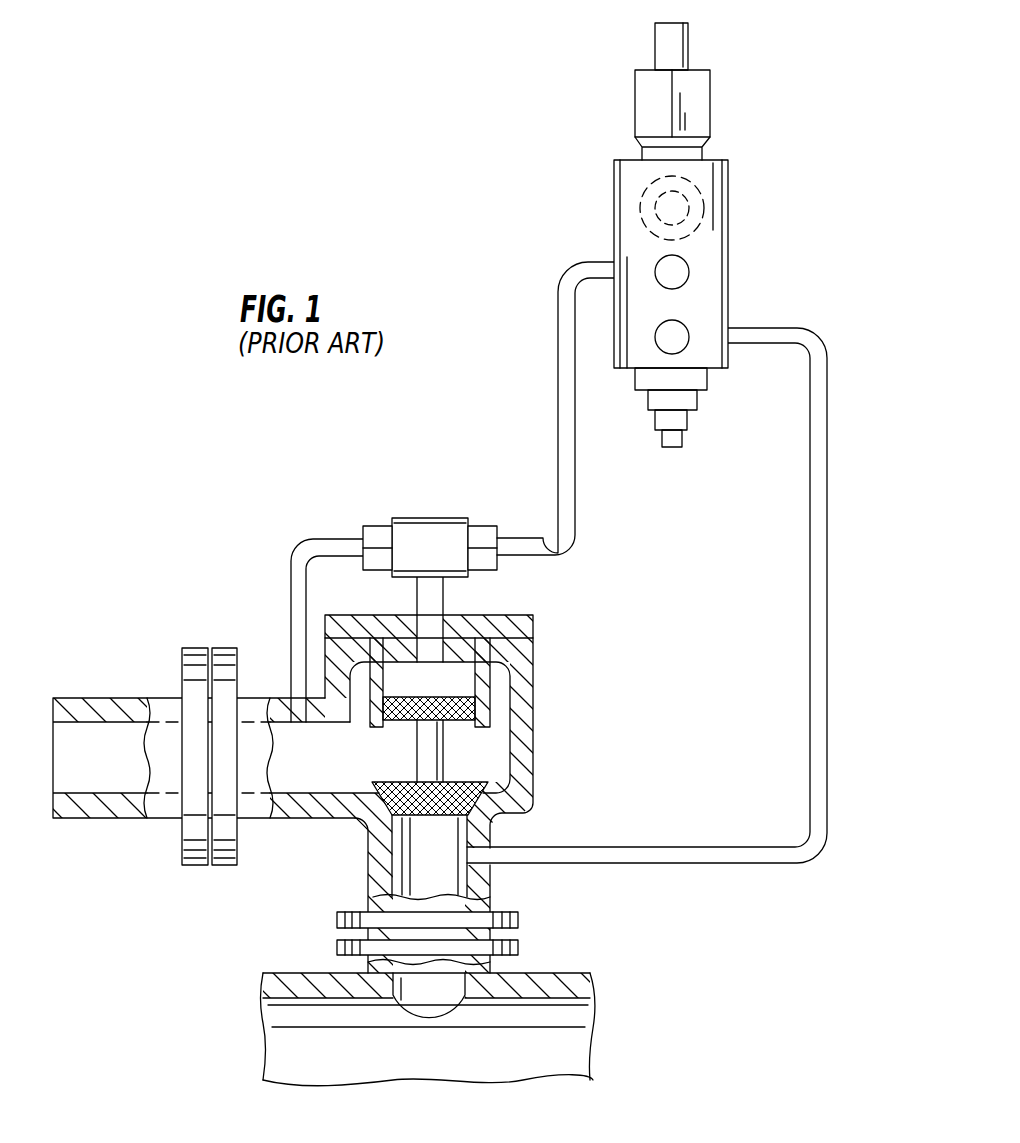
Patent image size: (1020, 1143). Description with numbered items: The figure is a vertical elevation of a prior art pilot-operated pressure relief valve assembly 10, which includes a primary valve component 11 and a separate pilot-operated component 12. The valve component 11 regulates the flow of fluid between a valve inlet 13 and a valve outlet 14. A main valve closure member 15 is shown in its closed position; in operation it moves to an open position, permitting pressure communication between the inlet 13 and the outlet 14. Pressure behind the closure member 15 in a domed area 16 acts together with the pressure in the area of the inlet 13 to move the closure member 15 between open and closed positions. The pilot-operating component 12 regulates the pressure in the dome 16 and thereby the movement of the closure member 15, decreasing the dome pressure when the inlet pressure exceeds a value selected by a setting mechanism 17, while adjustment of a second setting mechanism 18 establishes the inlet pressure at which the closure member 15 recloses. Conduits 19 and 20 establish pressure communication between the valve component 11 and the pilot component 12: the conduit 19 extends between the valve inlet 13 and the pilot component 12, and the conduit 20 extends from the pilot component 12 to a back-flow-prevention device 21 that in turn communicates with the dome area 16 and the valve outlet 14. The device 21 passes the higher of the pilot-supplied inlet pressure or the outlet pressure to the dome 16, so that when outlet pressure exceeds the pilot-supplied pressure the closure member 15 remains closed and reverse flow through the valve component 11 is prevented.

The pilot-operated pressure relief valve assembly 10 is at (176, 935).
The primary valve component 11 is at (537, 707).
The pilot-operated component 12 is at (729, 297).
The valve inlet 13 is at (367, 862).
The valve outlet 14 is at (285, 743).
The main valve closure member 15 is at (432, 820).
The domed area 16 is at (452, 673).
The setting mechanism 17 is at (653, 47).
The second setting mechanism 18 is at (684, 440).
The conduit 19 is at (829, 548).
The conduit 20 is at (557, 423).
The back-flow-prevention device 21 is at (425, 517).